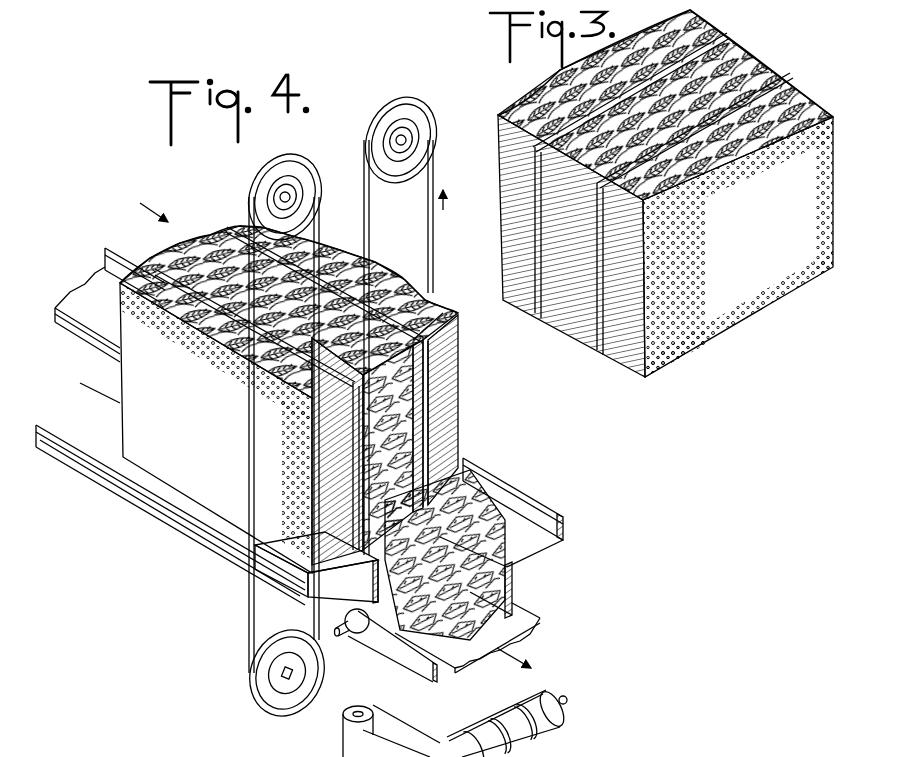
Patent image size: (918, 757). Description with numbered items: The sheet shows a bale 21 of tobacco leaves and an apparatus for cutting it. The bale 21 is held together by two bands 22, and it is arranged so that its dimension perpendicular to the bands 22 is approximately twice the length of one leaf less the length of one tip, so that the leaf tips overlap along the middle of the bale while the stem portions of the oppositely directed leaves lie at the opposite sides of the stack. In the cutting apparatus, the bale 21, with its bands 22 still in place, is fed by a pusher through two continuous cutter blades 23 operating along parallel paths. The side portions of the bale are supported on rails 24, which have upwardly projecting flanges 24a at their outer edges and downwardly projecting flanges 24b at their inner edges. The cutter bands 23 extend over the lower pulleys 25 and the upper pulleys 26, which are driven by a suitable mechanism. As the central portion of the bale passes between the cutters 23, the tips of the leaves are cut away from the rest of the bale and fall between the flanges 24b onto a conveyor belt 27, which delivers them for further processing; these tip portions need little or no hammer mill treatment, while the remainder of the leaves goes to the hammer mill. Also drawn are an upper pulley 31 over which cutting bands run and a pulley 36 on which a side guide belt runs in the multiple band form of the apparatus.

In FIG. 3, the bale 21 is at (793, 52).
In FIG. 4, the bale 21 is at (464, 293).
In FIG. 3, the bands 22 is at (603, 312).
In FIG. 4, the bands 22 is at (350, 493).
In FIG. 4, the continuous cutter blades 23 is at (317, 223).
In FIG. 4, the rails 24 is at (77, 412).
In FIG. 4, the upwardly projecting flanges 24a is at (70, 450).
In FIG. 4, the downwardly projecting flanges 24b is at (343, 606).
In FIG. 4, the lower pulleys 25 is at (271, 703).
In FIG. 4, the upper pulleys 26 is at (293, 196).
In FIG. 4, the conveyor belt 27 is at (517, 620).
In FIG. 4, the upper pulley 31 is at (558, 733).
In FIG. 4, the pulley 36 is at (377, 713).